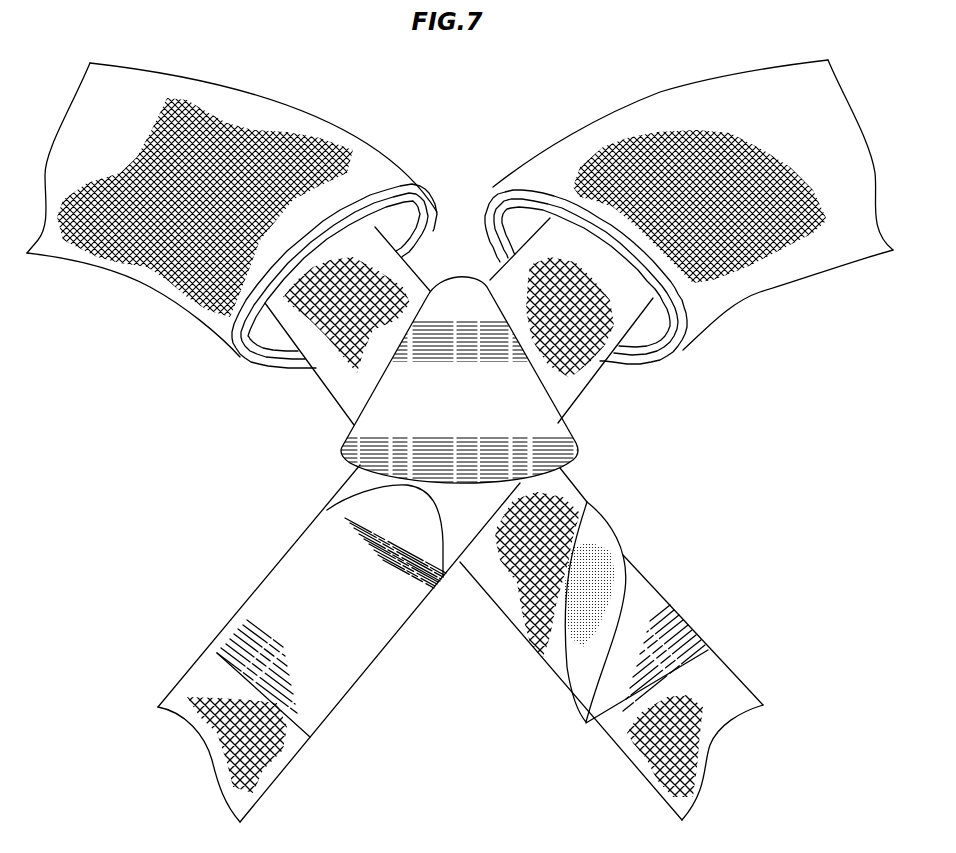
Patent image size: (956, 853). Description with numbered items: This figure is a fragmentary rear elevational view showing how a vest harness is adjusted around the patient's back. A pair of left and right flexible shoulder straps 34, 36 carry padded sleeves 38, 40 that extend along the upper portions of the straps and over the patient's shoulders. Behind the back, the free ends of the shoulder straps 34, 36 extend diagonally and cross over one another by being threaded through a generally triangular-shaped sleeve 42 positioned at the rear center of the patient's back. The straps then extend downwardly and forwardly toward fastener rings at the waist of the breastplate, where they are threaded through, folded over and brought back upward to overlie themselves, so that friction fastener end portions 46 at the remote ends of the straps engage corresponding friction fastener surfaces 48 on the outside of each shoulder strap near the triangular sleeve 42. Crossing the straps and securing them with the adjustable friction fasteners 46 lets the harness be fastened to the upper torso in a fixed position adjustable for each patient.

The left shoulder strap 34 is at (270, 758).
The right shoulder strap 36 is at (487, 482).
The padded sleeve 38 is at (680, 103).
The padded sleeve 40 is at (223, 102).
The triangular-shaped sleeve 42 is at (445, 400).
The friction fastener end portion 46 is at (597, 572).
The friction fastener surface 48 is at (353, 488).